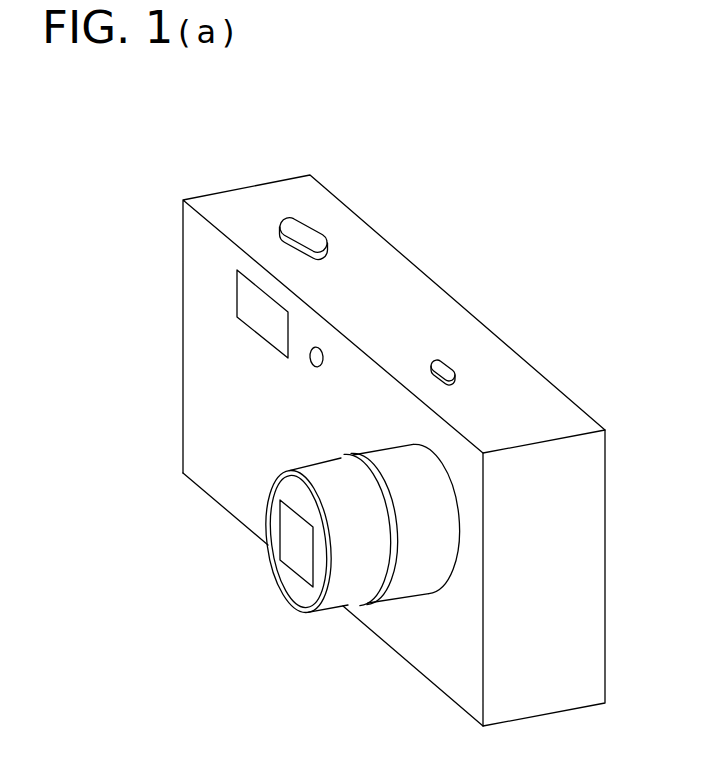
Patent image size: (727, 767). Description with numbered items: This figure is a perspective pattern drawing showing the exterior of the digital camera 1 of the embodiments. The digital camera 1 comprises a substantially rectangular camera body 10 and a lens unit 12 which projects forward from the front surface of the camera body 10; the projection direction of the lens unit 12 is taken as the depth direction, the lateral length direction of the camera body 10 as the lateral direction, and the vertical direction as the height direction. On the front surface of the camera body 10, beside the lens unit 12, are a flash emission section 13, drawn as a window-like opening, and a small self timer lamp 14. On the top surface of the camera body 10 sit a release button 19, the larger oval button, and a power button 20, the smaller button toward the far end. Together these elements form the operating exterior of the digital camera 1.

The digital camera 1 is at (178, 172).
The camera body 10 is at (204, 360).
The lens unit 12 is at (315, 620).
The flash emission section 13 is at (273, 317).
The self timer lamp 14 is at (323, 352).
The release button 19 is at (307, 235).
The power button 20 is at (447, 367).